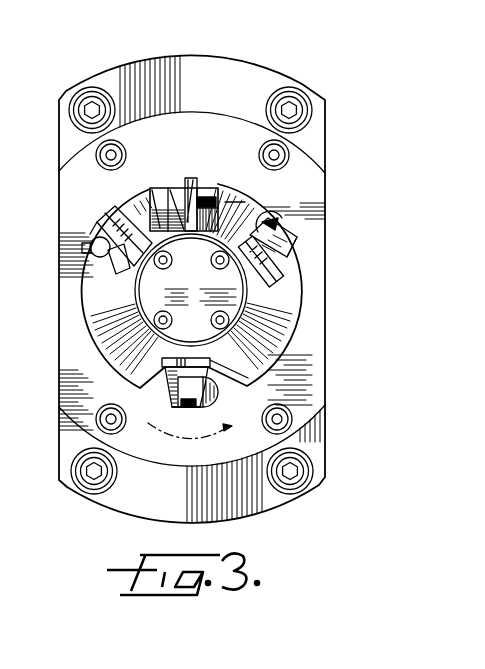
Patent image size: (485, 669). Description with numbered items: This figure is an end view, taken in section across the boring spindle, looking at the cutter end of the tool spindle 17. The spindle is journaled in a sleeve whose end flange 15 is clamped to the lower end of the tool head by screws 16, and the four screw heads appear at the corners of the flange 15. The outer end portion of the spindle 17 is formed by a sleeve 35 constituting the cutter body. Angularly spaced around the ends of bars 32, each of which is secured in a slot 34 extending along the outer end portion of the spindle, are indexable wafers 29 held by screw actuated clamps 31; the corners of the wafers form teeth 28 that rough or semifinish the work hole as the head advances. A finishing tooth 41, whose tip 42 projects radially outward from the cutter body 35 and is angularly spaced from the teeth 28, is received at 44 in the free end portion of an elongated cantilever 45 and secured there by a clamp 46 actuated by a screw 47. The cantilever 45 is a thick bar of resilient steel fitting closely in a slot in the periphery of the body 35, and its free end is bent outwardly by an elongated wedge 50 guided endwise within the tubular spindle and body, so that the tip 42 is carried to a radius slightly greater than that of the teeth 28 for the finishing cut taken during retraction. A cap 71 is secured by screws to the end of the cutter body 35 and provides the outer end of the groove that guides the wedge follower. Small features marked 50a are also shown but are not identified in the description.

The end flange 15 is at (201, 56).
The screws 16 is at (90, 87).
The tool spindle 17 is at (90, 348).
The teeth 28 is at (93, 230).
The indexable wafers 29 is at (95, 216).
The screw actuated clamps 31 is at (81, 249).
The bars 32 is at (120, 223).
The slot 34 is at (100, 280).
The cutter body 35 is at (95, 326).
The finishing tooth 41 is at (194, 180).
The tooth tip 42 is at (188, 184).
The seat 44 is at (199, 191).
The cantilever 45 is at (222, 202).
The clamp 46 is at (168, 189).
The screw 47 is at (167, 215).
The wedge 50 is at (200, 230).
The locating pins 50a is at (150, 190).
The cap 71 is at (190, 286).